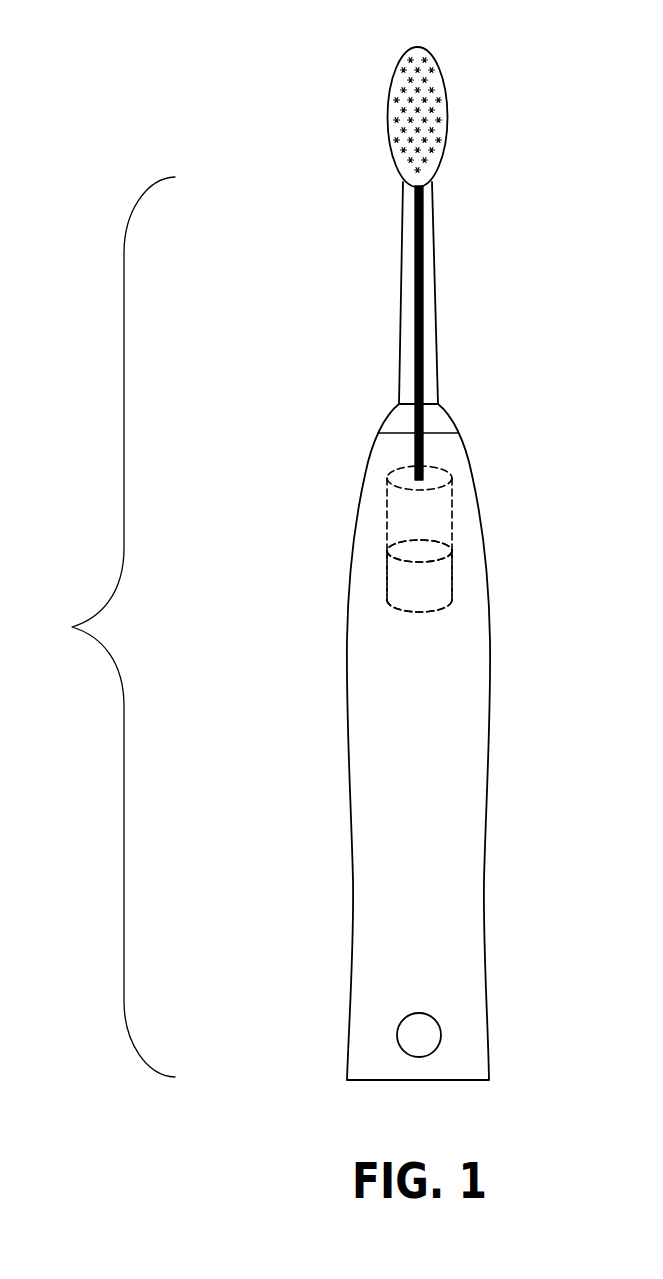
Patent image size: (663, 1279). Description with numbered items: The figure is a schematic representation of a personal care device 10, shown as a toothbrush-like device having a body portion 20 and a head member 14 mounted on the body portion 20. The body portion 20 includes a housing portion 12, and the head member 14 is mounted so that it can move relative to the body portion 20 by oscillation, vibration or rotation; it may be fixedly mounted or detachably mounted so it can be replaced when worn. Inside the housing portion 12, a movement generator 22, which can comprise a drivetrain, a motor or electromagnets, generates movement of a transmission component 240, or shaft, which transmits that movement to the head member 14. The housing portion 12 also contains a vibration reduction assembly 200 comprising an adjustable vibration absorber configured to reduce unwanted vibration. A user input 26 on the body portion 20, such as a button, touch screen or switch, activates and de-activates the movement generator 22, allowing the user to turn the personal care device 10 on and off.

The personal care device 10 is at (267, 105).
The housing portion 12 is at (340, 610).
The head member 14 is at (392, 277).
The body portion 20 is at (101, 627).
The movement generator 22 is at (443, 585).
The user input 26 is at (405, 1035).
The vibration reduction assembly 200 is at (445, 502).
The transmission component 240 is at (418, 345).